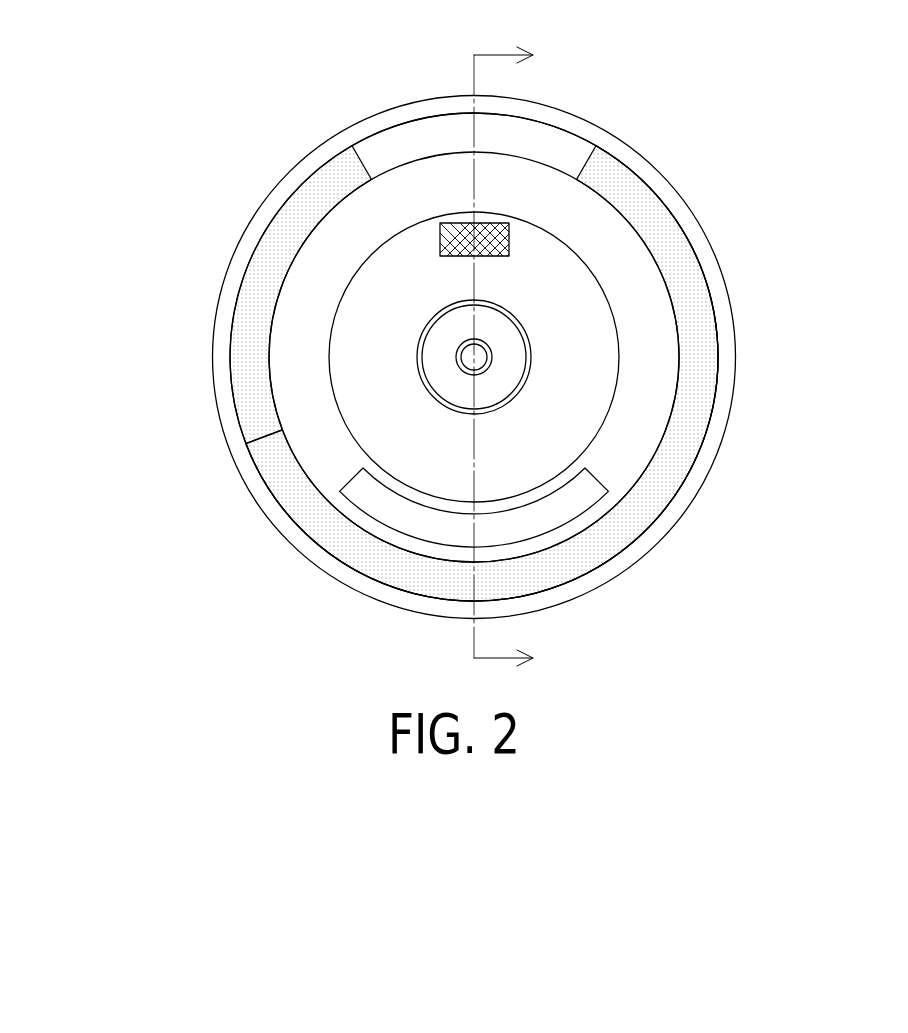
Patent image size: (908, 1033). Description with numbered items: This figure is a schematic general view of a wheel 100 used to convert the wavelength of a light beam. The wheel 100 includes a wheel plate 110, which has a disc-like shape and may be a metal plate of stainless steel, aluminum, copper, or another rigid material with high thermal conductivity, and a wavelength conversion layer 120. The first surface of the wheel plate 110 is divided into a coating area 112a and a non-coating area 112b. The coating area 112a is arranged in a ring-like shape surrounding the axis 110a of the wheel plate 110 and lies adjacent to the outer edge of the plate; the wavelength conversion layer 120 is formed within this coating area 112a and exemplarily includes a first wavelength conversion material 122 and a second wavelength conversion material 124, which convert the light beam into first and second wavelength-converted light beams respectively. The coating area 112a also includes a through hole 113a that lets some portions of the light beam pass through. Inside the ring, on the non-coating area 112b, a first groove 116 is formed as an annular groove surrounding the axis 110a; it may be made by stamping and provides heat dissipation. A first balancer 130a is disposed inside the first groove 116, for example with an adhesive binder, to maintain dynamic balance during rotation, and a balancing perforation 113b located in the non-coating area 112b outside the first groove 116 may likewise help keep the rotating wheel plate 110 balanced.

The wheel 100 is at (197, 178).
The wheel plate 110 is at (355, 133).
The axis 110a is at (480, 356).
The coating area 112a is at (675, 455).
The non-coating area 112b is at (660, 330).
The through hole 113a is at (538, 152).
The balancing perforation 113b is at (568, 495).
The first groove 116 is at (573, 298).
The wavelength conversion layer 120 is at (393, 373).
The first wavelength conversion material 122 is at (253, 313).
The second wavelength conversion material 124 is at (137, 287).
The first balancer 130a is at (510, 237).